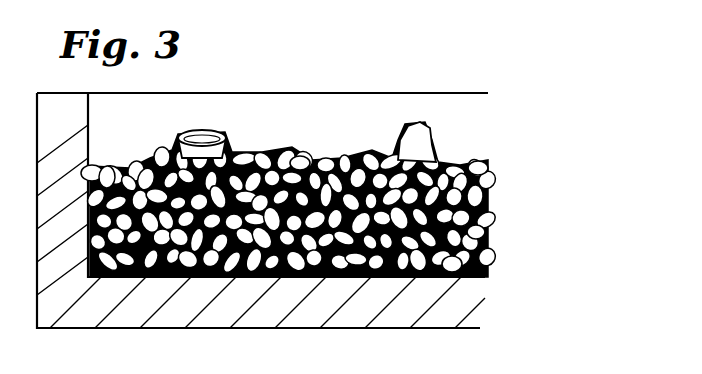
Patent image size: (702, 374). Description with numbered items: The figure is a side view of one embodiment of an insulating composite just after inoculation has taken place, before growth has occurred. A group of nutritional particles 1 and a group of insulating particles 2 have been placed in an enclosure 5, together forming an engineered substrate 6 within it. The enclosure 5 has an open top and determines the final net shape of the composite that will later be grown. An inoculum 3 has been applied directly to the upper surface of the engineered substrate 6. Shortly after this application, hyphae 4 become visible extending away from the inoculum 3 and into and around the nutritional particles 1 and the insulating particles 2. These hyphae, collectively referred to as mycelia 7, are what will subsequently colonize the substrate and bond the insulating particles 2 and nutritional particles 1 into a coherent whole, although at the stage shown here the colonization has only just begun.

The nutritional particles 1 is at (452, 270).
The insulating particles 2 is at (482, 232).
The inoculum 3 is at (195, 133).
The hyphae 4 is at (302, 160).
The enclosure 5 is at (322, 302).
The engineered substrate 6 is at (500, 201).
The mycelia 7 is at (483, 160).